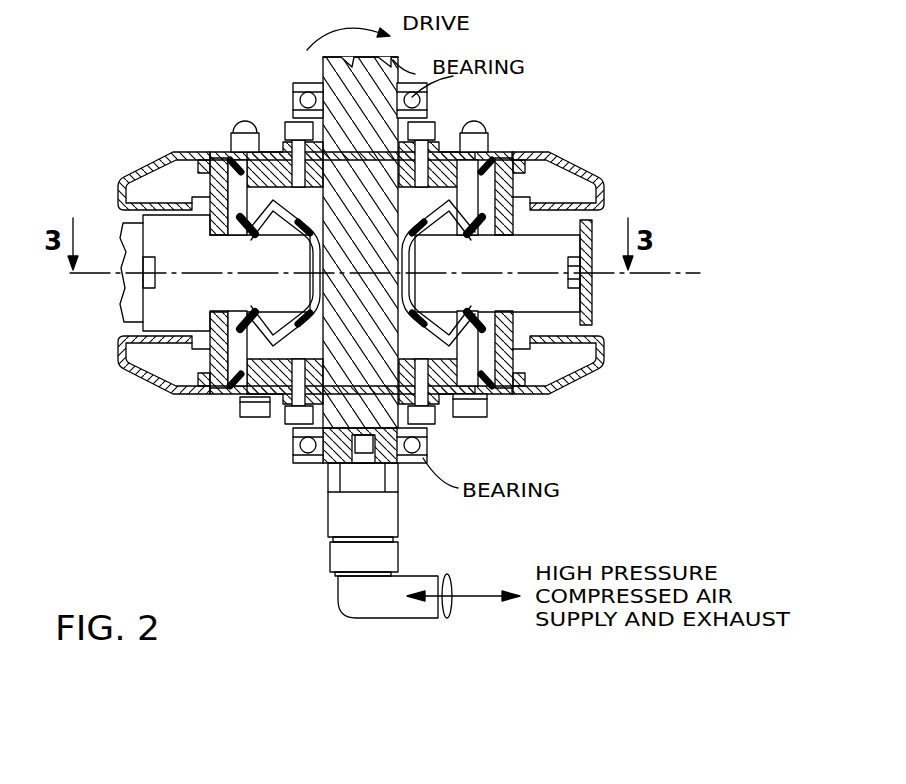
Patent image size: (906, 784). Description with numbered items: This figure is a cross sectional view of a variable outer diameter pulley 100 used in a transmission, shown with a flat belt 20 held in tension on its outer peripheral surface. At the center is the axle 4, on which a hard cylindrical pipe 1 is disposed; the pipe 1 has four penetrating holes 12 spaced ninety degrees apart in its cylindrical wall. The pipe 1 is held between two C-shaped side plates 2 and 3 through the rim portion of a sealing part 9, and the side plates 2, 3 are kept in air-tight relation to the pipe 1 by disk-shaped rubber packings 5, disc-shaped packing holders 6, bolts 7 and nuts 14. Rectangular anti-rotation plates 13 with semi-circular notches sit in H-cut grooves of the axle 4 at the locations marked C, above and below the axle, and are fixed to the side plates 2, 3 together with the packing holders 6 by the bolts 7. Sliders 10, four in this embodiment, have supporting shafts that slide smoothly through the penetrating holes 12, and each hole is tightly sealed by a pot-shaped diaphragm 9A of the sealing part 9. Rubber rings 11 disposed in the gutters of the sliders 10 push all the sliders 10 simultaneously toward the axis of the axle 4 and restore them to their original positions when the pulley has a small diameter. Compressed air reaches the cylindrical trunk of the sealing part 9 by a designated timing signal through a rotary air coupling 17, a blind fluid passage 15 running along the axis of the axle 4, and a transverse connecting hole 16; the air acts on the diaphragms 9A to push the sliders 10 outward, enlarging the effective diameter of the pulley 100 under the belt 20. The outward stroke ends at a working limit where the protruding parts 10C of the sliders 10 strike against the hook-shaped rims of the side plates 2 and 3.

The variable outer diameter pulley 100 is at (128, 162).
The pipe 1 is at (222, 180).
The side plate 2 is at (168, 152).
The side plate 3 is at (118, 340).
The axle 4 is at (337, 420).
The rubber packing 5 is at (322, 140).
The packing holder 6 is at (250, 122).
The bolt 7 is at (237, 407).
The sealing part 9 is at (215, 360).
The diaphragm 9A is at (300, 212).
The slider 10 is at (157, 302).
The protruding part 10C is at (540, 243).
The rubber ring 11 is at (122, 265).
The penetrating hole 12 is at (515, 312).
The anti-rotation plate 13 is at (437, 150).
The nut 14 is at (486, 138).
The fluid passage 15 is at (362, 412).
The transverse connecting hole 16 is at (248, 356).
The rotary air coupling 17 is at (383, 513).
The flat belt 20 is at (127, 225).
The H-cut groove location C is at (300, 416).